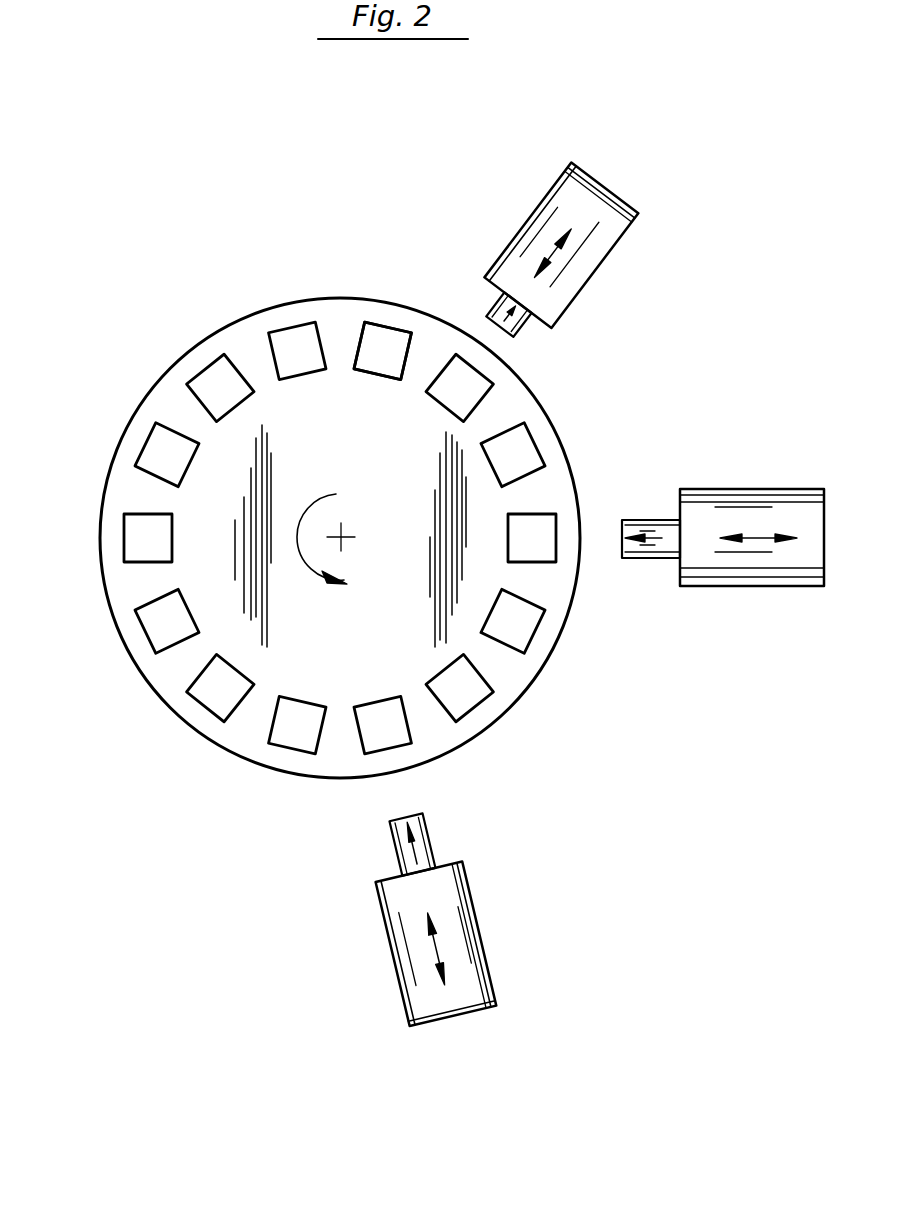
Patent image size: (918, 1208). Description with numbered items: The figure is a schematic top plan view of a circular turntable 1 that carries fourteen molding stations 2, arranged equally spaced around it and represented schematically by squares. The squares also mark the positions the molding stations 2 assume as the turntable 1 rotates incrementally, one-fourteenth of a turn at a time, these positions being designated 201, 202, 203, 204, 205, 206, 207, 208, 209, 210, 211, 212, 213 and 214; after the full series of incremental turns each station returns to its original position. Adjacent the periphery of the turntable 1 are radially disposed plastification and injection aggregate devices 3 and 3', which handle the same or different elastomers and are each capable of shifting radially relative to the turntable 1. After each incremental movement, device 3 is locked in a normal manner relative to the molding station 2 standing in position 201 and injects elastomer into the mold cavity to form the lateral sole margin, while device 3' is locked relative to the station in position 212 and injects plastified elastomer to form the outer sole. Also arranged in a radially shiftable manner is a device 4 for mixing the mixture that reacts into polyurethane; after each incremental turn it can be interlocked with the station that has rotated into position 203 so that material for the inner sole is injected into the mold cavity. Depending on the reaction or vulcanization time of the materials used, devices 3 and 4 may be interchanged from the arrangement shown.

The circular turntable 1 is at (122, 482).
The molding station 2 is at (380, 350).
The molding station position 201 is at (537, 540).
The molding station position 202 is at (512, 452).
The molding station position 203 is at (456, 386).
The molding station position 204 is at (393, 353).
The molding station position 205 is at (300, 343).
The molding station position 206 is at (218, 383).
The molding station position 207 is at (162, 452).
The molding station position 208 is at (145, 550).
The molding station position 209 is at (168, 625).
The molding station position 210 is at (221, 695).
The molding station position 211 is at (298, 733).
The molding station position 212 is at (392, 735).
The molding station position 213 is at (466, 695).
The molding station position 214 is at (518, 632).
The plastification and injection aggregate device 3 is at (723, 716).
The plastification and injection aggregate device 3' is at (499, 955).
The mixing device 4 is at (586, 253).